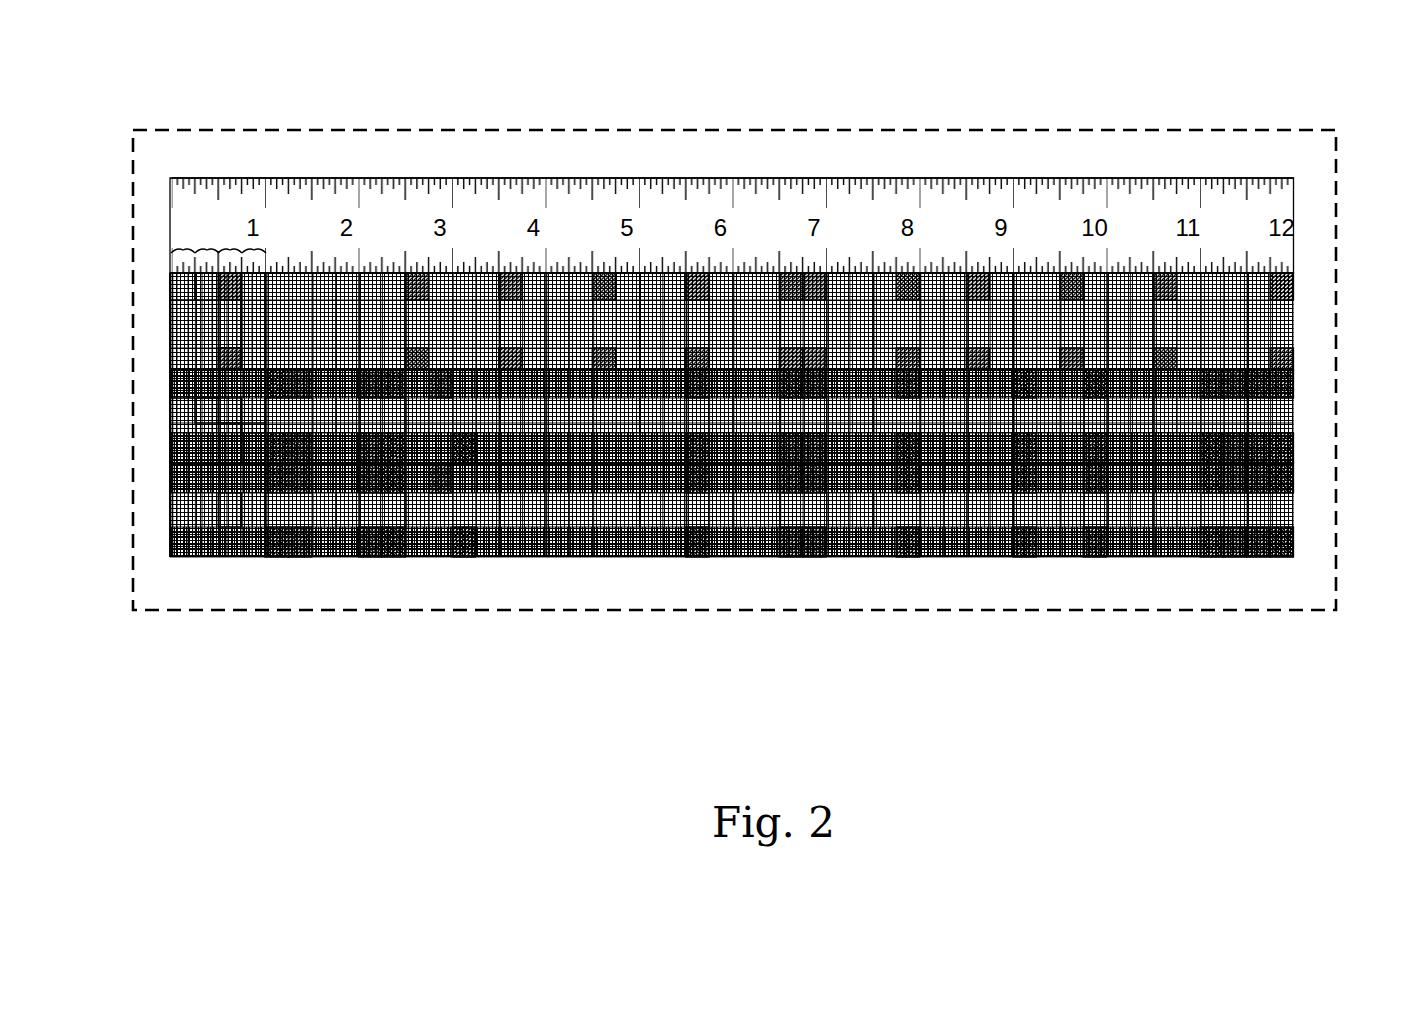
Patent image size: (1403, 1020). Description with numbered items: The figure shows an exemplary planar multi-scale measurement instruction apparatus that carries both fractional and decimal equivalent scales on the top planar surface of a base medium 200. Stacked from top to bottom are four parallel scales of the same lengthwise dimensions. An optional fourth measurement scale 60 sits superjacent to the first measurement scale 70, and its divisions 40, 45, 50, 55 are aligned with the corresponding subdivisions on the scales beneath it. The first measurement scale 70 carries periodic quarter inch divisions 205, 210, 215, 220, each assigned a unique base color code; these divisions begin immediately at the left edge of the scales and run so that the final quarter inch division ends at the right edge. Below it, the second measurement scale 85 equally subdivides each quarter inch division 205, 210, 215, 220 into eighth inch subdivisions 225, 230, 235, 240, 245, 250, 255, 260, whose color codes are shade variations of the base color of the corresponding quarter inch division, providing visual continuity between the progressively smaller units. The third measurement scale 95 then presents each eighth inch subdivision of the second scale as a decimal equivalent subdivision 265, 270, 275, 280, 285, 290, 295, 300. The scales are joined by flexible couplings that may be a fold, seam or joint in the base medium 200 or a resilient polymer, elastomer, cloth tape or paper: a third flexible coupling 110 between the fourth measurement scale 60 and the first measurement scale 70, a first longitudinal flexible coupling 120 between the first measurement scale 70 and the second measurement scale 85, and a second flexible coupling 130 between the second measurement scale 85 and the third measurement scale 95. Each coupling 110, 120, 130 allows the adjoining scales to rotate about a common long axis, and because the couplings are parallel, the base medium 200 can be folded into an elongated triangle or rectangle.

The division 40 is at (183, 250).
The division 45 is at (207, 250).
The division 50 is at (230, 250).
The division 55 is at (253, 250).
The fourth measurement scale 60 is at (1355, 187).
The first measurement scale 70 is at (1360, 310).
The second measurement scale 85 is at (1360, 411).
The third measurement scale 95 is at (1360, 515).
The third flexible coupling 110 is at (1294, 273).
The first longitudinal flexible coupling 120 is at (1294, 370).
The second flexible coupling 130 is at (1294, 463).
The base medium 200 is at (141, 600).
The quarter inch division 205 is at (178, 281).
The quarter inch division 210 is at (205, 296).
The quarter inch division 215 is at (228, 338).
The quarter inch division 220 is at (250, 352).
The eighth inch subdivision 225 is at (175, 376).
The eighth inch subdivision 230 is at (198, 393).
The eighth inch subdivision 235 is at (214, 404).
The eighth inch subdivision 240 is at (240, 420).
The eighth inch subdivision 245 is at (238, 440).
The eighth inch subdivision 250 is at (247, 448).
The eighth inch subdivision 255 is at (263, 452).
The eighth inch subdivision 260 is at (247, 507).
The decimal equivalent subdivision 265 is at (177, 557).
The decimal equivalent subdivision 270 is at (188, 557).
The decimal equivalent subdivision 275 is at (202, 557).
The decimal equivalent subdivision 280 is at (212, 557).
The decimal equivalent subdivision 285 is at (227, 557).
The decimal equivalent subdivision 290 is at (237, 557).
The decimal equivalent subdivision 295 is at (252, 557).
The decimal equivalent subdivision 300 is at (267, 557).